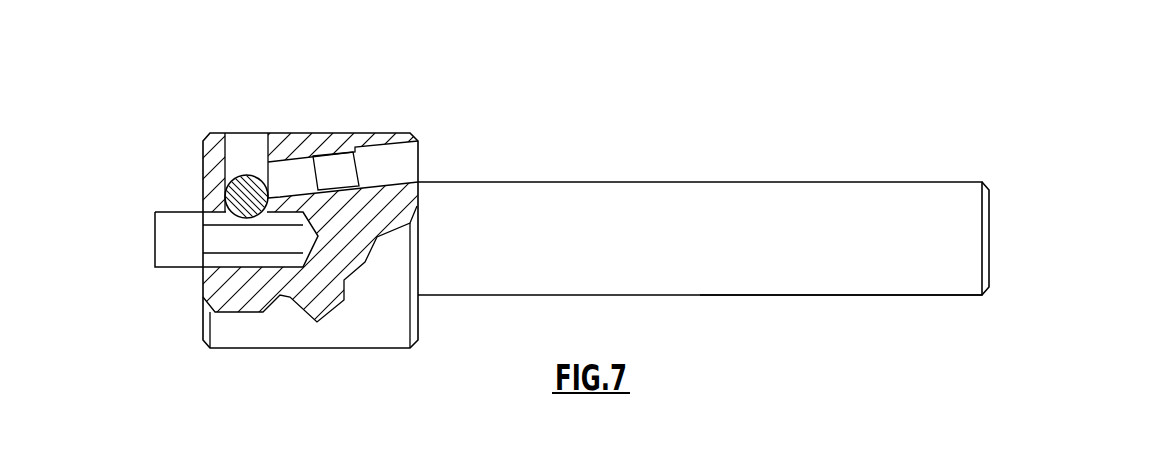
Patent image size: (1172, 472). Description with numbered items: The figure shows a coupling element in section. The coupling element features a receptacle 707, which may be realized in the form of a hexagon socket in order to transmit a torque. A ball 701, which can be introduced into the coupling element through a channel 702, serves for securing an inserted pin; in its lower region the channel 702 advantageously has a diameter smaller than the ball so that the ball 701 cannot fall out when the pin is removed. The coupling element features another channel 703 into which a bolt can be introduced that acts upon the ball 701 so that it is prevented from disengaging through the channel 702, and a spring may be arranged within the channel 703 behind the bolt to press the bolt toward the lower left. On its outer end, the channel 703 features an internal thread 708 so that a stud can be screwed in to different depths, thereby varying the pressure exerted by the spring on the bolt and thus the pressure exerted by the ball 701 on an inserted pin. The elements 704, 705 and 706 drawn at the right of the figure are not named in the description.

The ball 701 is at (236, 177).
The channel 702 is at (280, 136).
The channel 703 is at (324, 160).
The rod 704 is at (862, 240).
The rod end chamfer 705 is at (983, 181).
The rod outer surface 706 is at (817, 277).
The receptacle 707 is at (237, 258).
The internal thread 708 is at (392, 142).